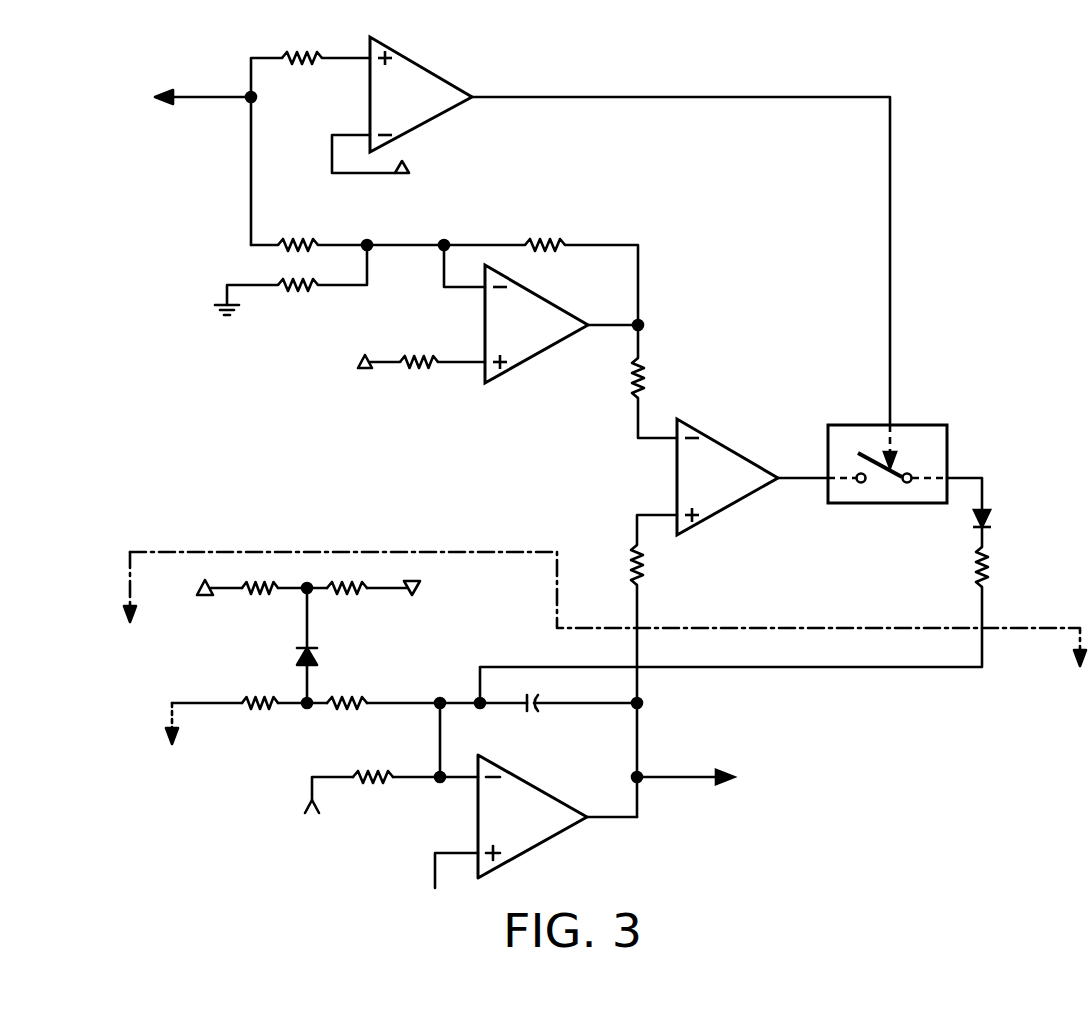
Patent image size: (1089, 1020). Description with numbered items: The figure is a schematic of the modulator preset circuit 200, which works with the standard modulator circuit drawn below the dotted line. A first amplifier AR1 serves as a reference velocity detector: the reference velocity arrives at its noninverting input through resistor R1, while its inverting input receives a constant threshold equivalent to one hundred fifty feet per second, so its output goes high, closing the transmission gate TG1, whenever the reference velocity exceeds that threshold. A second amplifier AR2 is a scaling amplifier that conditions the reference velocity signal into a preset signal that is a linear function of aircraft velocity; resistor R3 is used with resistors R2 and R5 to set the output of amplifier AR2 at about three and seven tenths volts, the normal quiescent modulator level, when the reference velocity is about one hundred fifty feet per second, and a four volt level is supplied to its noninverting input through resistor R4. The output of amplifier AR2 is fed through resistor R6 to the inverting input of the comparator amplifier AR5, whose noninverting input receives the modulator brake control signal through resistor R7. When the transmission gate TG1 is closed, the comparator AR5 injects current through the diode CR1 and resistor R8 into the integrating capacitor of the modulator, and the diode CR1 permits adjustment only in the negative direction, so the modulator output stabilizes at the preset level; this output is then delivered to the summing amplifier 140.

The modulator preset circuit 200 is at (570, 463).
The summing amplifier 140 is at (827, 780).
The resistor R1 is at (302, 47).
The resistor R2 is at (298, 232).
The resistor R3 is at (298, 299).
The resistor R4 is at (419, 349).
The resistor R5 is at (545, 232).
The resistor R6 is at (655, 378).
The resistor R7 is at (653, 565).
The resistor R8 is at (999, 567).
The first amplifier AR1 is at (436, 94).
The second amplifier AR2 is at (536, 327).
The amplifier AR5 is at (727, 473).
The transmission gate TG1 is at (894, 449).
The diode CR1 is at (1007, 520).